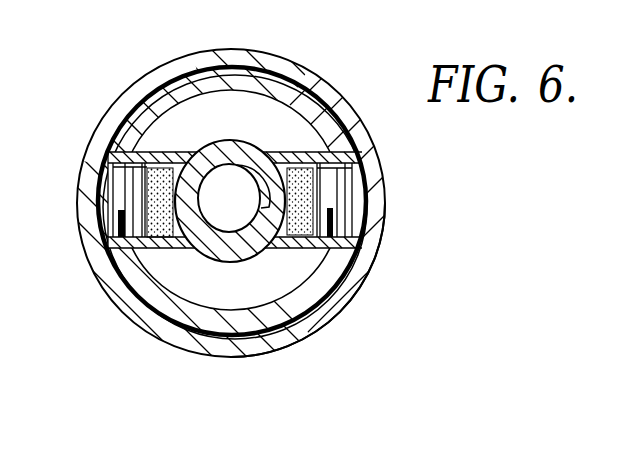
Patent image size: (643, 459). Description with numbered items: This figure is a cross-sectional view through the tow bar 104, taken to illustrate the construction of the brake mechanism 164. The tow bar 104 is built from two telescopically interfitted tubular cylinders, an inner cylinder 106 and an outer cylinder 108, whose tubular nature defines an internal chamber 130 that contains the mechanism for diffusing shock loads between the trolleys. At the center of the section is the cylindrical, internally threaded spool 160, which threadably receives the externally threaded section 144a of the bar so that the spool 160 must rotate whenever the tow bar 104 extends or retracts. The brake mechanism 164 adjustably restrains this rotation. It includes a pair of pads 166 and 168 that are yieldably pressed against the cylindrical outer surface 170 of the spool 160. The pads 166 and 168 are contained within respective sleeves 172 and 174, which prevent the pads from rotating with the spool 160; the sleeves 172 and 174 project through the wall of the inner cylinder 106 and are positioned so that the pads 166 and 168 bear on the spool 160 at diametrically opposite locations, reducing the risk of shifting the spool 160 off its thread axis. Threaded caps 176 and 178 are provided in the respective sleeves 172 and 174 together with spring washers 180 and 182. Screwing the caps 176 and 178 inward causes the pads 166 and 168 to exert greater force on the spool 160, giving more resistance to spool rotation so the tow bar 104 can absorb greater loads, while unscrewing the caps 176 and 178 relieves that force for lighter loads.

The tow bar 104 is at (135, 90).
The inner cylinder 106 is at (330, 300).
The outer cylinder 108 is at (290, 70).
The internal chamber 130 is at (300, 133).
The externally threaded section 144a is at (220, 213).
The spool 160 is at (233, 152).
The brake mechanism 164 is at (360, 143).
The pad 166 is at (162, 168).
The pad 168 is at (294, 250).
The cylindrical outer surface 170 is at (124, 303).
The sleeve 172 is at (104, 270).
The sleeve 174 is at (370, 263).
The threaded cap 176 is at (100, 178).
The threaded cap 178 is at (345, 217).
The spring washer 180 is at (104, 163).
The spring washer 182 is at (362, 176).